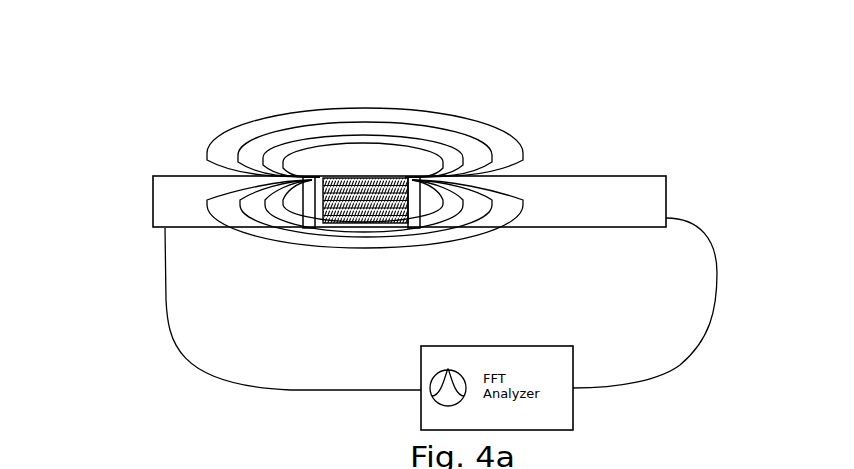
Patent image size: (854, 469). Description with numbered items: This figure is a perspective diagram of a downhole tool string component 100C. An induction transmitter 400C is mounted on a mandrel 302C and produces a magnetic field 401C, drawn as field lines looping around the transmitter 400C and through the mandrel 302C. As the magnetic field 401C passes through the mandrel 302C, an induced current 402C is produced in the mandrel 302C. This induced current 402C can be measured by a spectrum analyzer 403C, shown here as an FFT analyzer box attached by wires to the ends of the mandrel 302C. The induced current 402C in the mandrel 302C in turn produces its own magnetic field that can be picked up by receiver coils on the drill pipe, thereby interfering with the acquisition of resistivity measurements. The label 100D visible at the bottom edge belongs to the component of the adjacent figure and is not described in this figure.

The downhole tool string component 100C is at (250, 78).
The mandrel 302C is at (182, 203).
The induction transmitter 400C is at (421, 203).
The magnetic field 401C is at (453, 113).
The induced current 402C is at (436, 400).
The spectrum analyzer 403C is at (522, 430).
The leak detection system (next figure) 100D is at (176, 461).